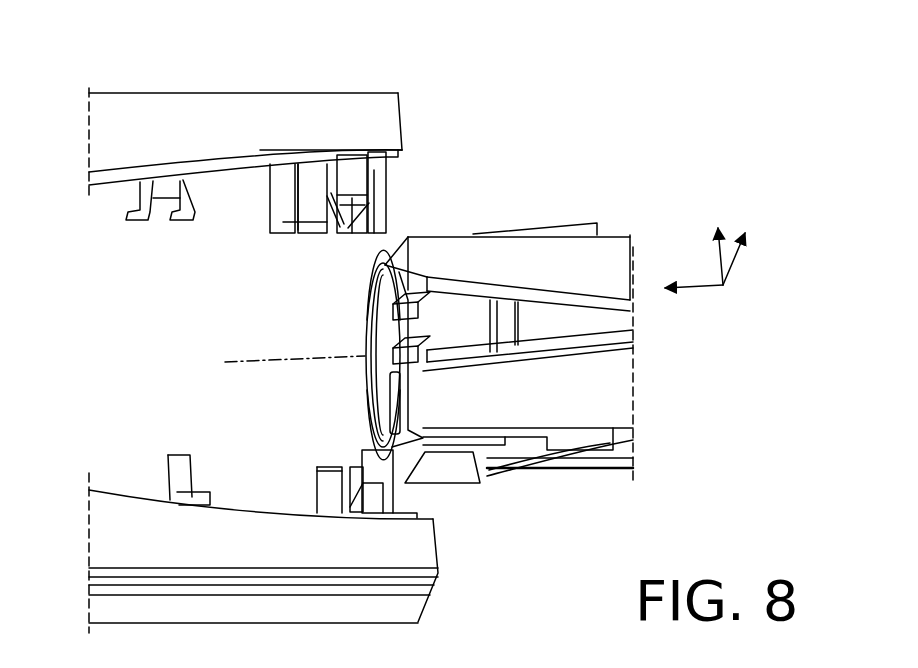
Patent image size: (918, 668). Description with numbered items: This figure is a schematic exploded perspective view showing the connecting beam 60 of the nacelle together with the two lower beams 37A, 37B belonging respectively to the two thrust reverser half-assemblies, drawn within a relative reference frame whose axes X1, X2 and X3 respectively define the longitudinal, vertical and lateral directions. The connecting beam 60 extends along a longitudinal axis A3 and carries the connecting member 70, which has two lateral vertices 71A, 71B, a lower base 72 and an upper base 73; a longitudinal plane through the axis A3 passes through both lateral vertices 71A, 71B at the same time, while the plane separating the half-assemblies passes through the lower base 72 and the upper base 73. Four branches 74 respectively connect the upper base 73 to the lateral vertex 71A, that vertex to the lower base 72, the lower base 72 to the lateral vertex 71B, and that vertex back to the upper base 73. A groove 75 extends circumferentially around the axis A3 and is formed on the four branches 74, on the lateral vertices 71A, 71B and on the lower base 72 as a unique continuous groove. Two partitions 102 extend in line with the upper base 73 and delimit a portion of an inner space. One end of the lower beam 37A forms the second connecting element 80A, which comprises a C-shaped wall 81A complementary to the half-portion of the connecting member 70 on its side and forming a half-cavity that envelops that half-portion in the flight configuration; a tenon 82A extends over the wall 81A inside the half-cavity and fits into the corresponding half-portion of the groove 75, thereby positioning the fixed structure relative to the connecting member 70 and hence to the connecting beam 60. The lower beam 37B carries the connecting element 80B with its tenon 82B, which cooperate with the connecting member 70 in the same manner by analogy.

The lower beam 37A is at (147, 113).
The second connecting element 80A is at (373, 90).
The tenon 82A is at (373, 215).
The wall 81A is at (388, 222).
The connecting member 70 is at (405, 229).
The connecting beam 60 is at (577, 203).
The partitions 102 is at (470, 300).
The lower base 72 is at (370, 375).
The upper base 73 is at (370, 333).
The lateral vertex 71A is at (372, 270).
The lateral vertex 71B is at (370, 440).
The branches 74 is at (380, 298).
The groove 75 is at (410, 402).
The longitudinal axis A3 is at (225, 361).
The lower beam 37B is at (410, 612).
The connecting element 80B is at (420, 542).
The tenon 82B is at (418, 507).
The longitudinal direction X1 is at (688, 304).
The vertical direction X2 is at (755, 259).
The lateral direction X3 is at (700, 246).